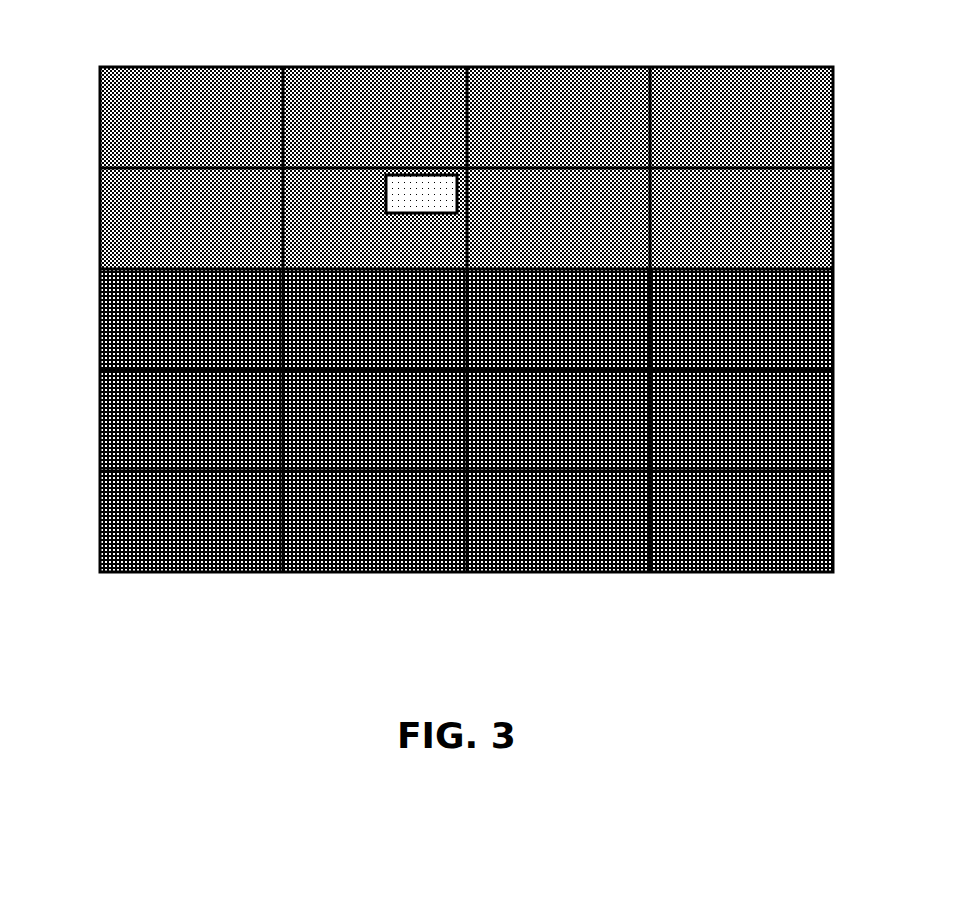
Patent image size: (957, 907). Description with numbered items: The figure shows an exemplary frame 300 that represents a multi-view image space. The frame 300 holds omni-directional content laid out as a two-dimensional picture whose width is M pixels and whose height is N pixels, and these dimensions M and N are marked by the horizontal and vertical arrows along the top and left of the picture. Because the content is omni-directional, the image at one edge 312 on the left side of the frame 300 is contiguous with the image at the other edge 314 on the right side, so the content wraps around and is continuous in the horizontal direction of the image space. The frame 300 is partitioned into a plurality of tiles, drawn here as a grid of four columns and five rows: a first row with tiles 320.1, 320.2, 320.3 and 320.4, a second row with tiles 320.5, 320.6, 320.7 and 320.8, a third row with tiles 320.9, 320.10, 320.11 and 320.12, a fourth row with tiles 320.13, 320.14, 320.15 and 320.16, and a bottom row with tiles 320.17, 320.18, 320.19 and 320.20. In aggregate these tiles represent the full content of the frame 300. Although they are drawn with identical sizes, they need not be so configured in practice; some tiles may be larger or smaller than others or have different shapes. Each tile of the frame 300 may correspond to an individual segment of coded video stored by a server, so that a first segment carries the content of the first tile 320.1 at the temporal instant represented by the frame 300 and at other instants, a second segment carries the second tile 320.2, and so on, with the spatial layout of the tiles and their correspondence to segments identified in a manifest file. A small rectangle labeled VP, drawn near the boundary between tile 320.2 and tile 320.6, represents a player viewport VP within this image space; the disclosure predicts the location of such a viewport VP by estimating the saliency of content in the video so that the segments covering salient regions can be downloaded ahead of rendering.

The frame 300 is at (476, 789).
The edge of the frame 312 is at (100, 126).
The edge of the frame 314 is at (833, 126).
The tile 320.1 is at (191, 117).
The tile 320.2 is at (375, 117).
The tile 320.3 is at (558, 117).
The tile 320.4 is at (741, 117).
The tile 320.5 is at (191, 218).
The tile 320.6 is at (375, 218).
The tile 320.7 is at (558, 218).
The tile 320.8 is at (741, 218).
The tile 320.9 is at (191, 319).
The tile 320.10 is at (375, 319).
The tile 320.11 is at (558, 319).
The tile 320.12 is at (741, 319).
The tile 320.13 is at (191, 420).
The tile 320.14 is at (375, 420).
The tile 320.15 is at (558, 420).
The tile 320.16 is at (741, 420).
The tile 320.17 is at (191, 521).
The tile 320.18 is at (375, 521).
The tile 320.19 is at (558, 521).
The tile 320.20 is at (741, 521).
The viewport VP is at (431, 174).
The horizontal pixel dimension M is at (833, 28).
The vertical pixel dimension N is at (63, 67).